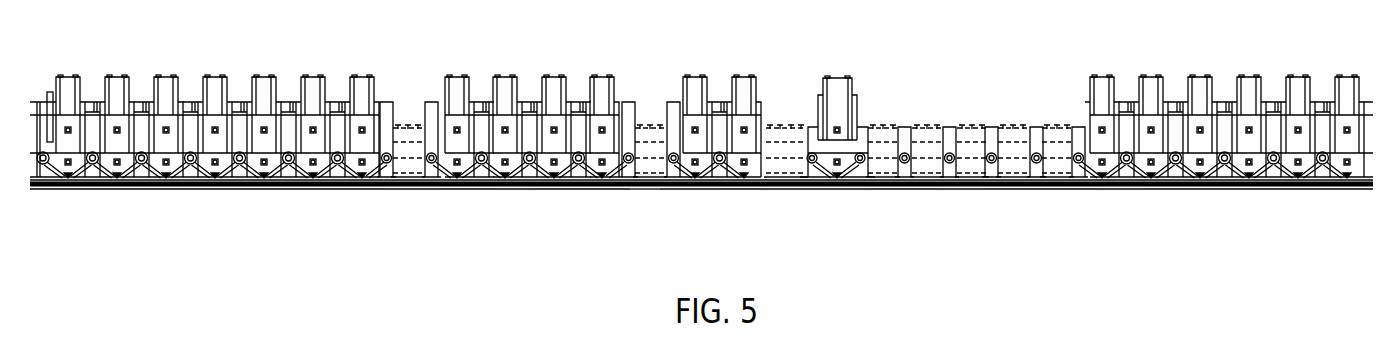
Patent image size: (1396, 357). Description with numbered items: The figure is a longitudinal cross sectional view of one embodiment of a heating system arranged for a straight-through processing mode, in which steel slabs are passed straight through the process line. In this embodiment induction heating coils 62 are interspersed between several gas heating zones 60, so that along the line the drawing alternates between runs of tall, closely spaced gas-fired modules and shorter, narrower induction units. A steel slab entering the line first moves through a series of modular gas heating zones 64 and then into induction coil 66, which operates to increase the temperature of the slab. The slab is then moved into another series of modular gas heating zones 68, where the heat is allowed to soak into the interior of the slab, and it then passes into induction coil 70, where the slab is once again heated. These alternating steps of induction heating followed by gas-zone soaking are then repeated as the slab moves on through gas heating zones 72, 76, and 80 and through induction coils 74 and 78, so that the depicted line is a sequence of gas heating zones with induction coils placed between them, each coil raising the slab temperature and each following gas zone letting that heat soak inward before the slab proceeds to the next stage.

The gas heating zone 60 is at (266, 83).
The induction heating coil 62 is at (402, 120).
The modular gas heating zones 64 is at (118, 83).
The induction coil 66 is at (405, 185).
The modular gas heating zones 68 is at (513, 183).
The induction coil 70 is at (645, 188).
The gas heating zone 72 is at (697, 187).
The induction coil 74 is at (783, 188).
The gas heating zone 76 is at (837, 185).
The induction coil 78 is at (962, 188).
The gas heating zone 80 is at (1122, 190).